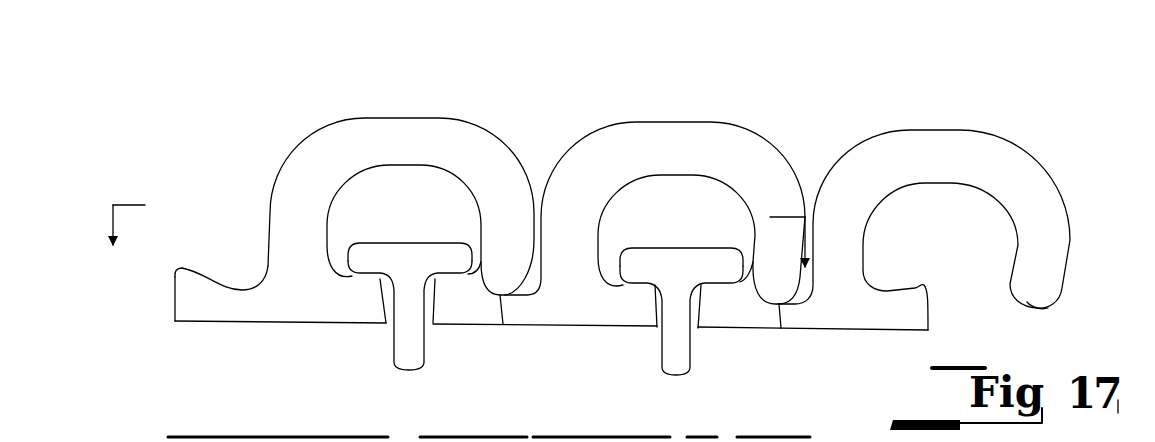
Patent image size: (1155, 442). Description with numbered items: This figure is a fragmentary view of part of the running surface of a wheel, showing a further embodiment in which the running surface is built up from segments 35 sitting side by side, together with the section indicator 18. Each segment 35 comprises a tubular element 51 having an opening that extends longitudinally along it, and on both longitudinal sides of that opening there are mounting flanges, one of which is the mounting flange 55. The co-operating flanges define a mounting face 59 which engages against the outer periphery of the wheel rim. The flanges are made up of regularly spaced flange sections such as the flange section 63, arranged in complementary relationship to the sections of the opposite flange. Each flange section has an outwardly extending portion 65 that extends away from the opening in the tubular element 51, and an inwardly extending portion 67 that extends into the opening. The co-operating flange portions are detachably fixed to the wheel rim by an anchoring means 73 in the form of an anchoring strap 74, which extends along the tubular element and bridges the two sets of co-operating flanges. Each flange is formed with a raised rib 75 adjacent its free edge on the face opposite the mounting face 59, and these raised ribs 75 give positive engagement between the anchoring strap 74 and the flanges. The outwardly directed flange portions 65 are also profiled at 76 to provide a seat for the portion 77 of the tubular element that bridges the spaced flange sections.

The section line 18- 18 is at (459, 219).
The segment 35 is at (655, 199).
The tubular element 51 is at (392, 132).
The mounting flange 55 is at (538, 355).
The mounting face 59 is at (538, 355).
The flange section 63 is at (187, 298).
The outwardly extending portion 65 is at (468, 313).
The inwardly extending portion 67 is at (355, 305).
The anchoring means 73 is at (545, 278).
The anchoring strap 74 is at (428, 245).
The raised rib 75 is at (180, 262).
The profiled seat 76 is at (503, 327).
The bridging portion of the tubular element 77 is at (1024, 306).